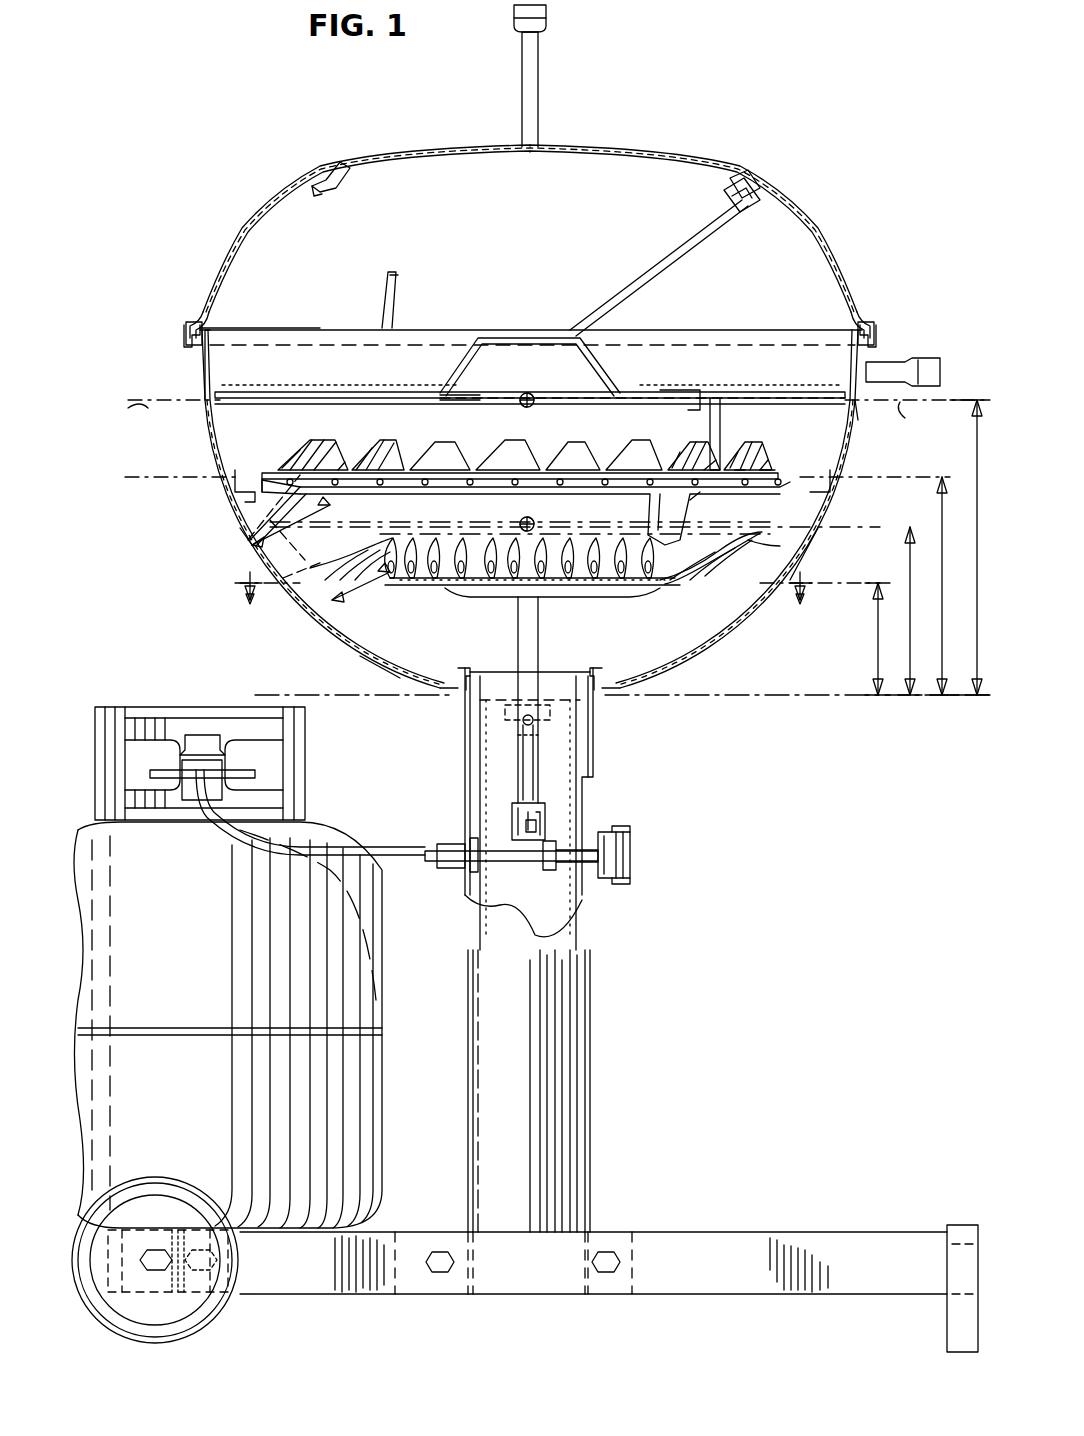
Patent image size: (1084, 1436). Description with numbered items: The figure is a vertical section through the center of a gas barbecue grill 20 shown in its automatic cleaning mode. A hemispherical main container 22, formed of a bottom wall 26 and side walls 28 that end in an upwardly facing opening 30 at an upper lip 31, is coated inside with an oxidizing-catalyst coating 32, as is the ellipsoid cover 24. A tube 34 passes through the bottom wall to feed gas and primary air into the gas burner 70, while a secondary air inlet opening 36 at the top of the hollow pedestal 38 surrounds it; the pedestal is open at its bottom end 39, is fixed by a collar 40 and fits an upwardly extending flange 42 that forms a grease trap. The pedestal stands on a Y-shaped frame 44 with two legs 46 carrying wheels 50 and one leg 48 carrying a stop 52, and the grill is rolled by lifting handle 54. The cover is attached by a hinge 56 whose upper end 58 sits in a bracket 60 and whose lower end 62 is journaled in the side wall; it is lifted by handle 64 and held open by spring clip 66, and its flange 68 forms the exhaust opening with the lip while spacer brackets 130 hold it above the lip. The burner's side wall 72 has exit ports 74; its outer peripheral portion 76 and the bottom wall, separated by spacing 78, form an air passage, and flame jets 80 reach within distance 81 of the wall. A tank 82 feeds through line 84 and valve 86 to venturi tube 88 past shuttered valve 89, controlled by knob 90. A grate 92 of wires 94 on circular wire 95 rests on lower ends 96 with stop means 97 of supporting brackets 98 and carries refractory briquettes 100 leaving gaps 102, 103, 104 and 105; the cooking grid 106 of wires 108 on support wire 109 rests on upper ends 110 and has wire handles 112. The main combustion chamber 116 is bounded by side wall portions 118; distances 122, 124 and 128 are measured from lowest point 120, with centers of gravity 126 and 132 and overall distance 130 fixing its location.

The barbecue grill 20 is at (712, 122).
The main container 22 is at (214, 441).
The cover 24 is at (455, 135).
The bottom wall 26 is at (370, 655).
The side walls 28 is at (850, 445).
The upwardly facing opening 30 is at (710, 328).
The upper lip 31 is at (265, 328).
The coating 32 is at (660, 165).
The tube 34 is at (548, 725).
The secondary air inlet opening 36 is at (478, 675).
The hollow pedestal 38 is at (585, 776).
The bottom end 39 is at (590, 1282).
The collar 40 is at (598, 718).
The flange 42 is at (590, 683).
The bottom frame 44 is at (738, 1190).
The legs 46 is at (350, 1282).
The leg 48 is at (852, 1248).
The wheel 50 is at (210, 1335).
The stop 52 is at (960, 1225).
The handle 54 is at (915, 358).
The hinge 56 is at (655, 235).
The upper end 58 is at (750, 182).
The bracket 60 is at (790, 208).
The lower end 62 is at (500, 408).
The handle 64 is at (540, 72).
The spring clip 66 is at (345, 184).
The flange 68 is at (185, 322).
The gas burner 70 is at (560, 595).
The side wall 72 is at (512, 600).
The exit ports 74 is at (415, 590).
The outer peripheral portion 76 is at (375, 585).
The spacing 78 is at (355, 615).
The flame jets 80 is at (585, 545).
The distance 81 is at (282, 522).
The tank 82 is at (228, 967).
The feed line 84 is at (395, 850).
The valve 86 is at (508, 868).
The venturi tube 88 is at (512, 800).
The shuttered valve 89 is at (532, 825).
The control knob 90 is at (632, 846).
The grate 92 is at (780, 473).
The parallel wires 94 is at (700, 492).
The circular wire 95 is at (755, 482).
The lower ends 96 is at (395, 492).
The stop means 97 is at (262, 470).
The supporting brackets 98 is at (218, 410).
The refractory material 100 is at (505, 460).
The gap 102 is at (742, 455).
The gap 103 is at (238, 478).
The gaps 104 is at (400, 445).
The gaps 105 is at (480, 460).
The cooking grid 106 is at (372, 382).
The parallel wires 108 is at (808, 384).
The circular support wire 109 is at (368, 410).
The upper ends 110 is at (668, 408).
The wire handles 112 is at (462, 332).
The main combustion chamber 116 is at (520, 505).
The side wall portions 118 is at (815, 515).
The lowest point 120 is at (470, 708).
The vertical distance 122 is at (879, 639).
The vertical distance 124 is at (935, 586).
The center of gravity 126 is at (522, 520).
The vertical distance 128 is at (912, 611).
The vertical distance / spacer brackets 130 is at (378, 288).
The center of gravity 132 is at (540, 404).